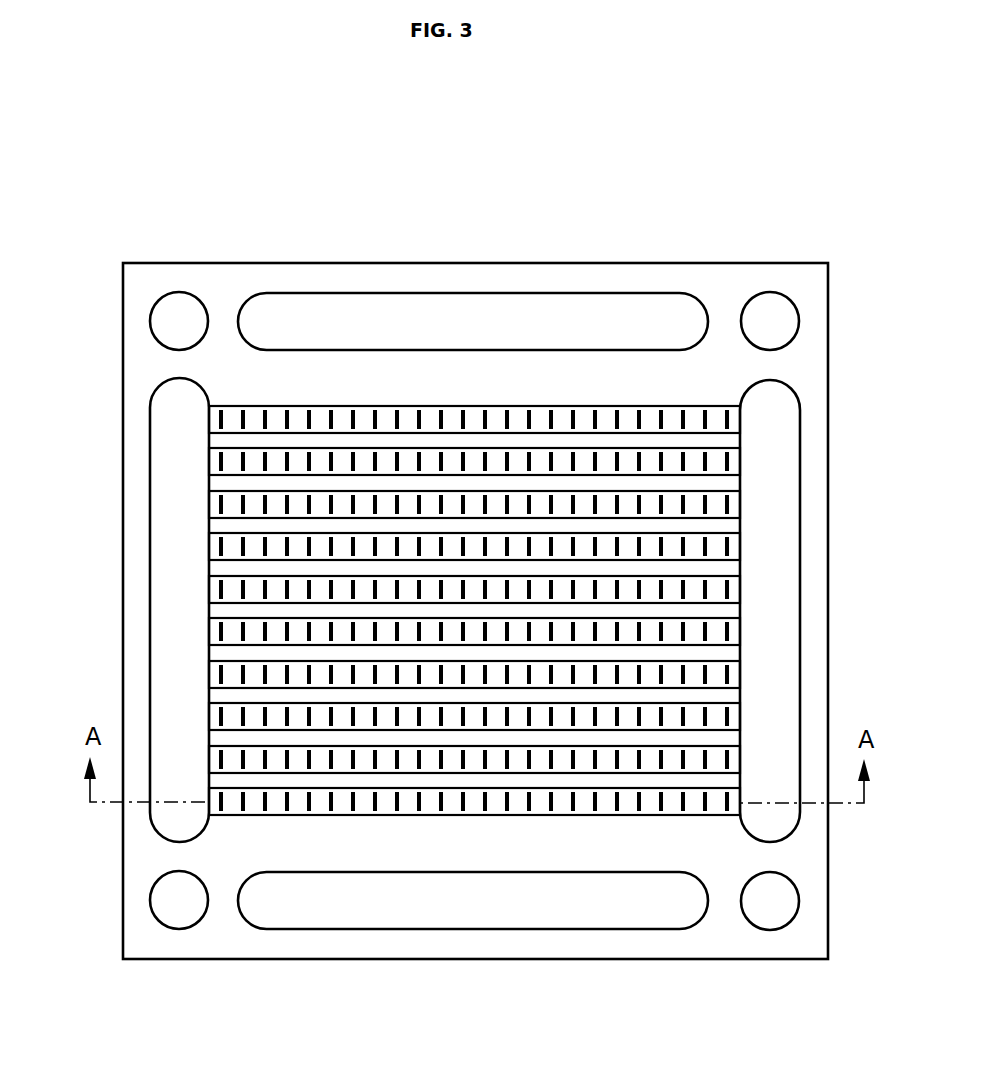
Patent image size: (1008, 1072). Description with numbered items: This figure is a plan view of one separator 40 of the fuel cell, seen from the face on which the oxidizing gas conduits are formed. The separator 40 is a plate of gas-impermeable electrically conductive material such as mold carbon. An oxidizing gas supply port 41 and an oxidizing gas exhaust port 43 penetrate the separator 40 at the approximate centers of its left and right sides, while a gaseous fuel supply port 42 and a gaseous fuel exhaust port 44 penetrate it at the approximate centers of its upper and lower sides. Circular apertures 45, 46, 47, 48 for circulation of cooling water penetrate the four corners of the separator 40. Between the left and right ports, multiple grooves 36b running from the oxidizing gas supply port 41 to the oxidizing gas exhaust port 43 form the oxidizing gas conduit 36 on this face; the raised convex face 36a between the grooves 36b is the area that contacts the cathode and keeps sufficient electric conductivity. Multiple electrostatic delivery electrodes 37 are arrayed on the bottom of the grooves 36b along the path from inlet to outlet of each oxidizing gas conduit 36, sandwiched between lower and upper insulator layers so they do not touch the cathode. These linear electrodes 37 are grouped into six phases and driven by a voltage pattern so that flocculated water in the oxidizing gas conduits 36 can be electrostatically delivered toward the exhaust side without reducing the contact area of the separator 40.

The separator 40 is at (512, 236).
The oxidizing gas supply port 41 is at (152, 592).
The gaseous fuel supply port 42 is at (706, 320).
The oxidizing gas exhaust port 43 is at (800, 612).
The gaseous fuel exhaust port 44 is at (703, 897).
The circular aperture 45 is at (202, 896).
The circular aperture 46 is at (793, 896).
The circular aperture 47 is at (205, 322).
The circular aperture 48 is at (795, 320).
The oxidizing gas conduit 36 is at (474, 618).
The convex face 36a is at (308, 442).
The groove 36b is at (366, 422).
The electrostatic delivery electrode 37 is at (420, 806).